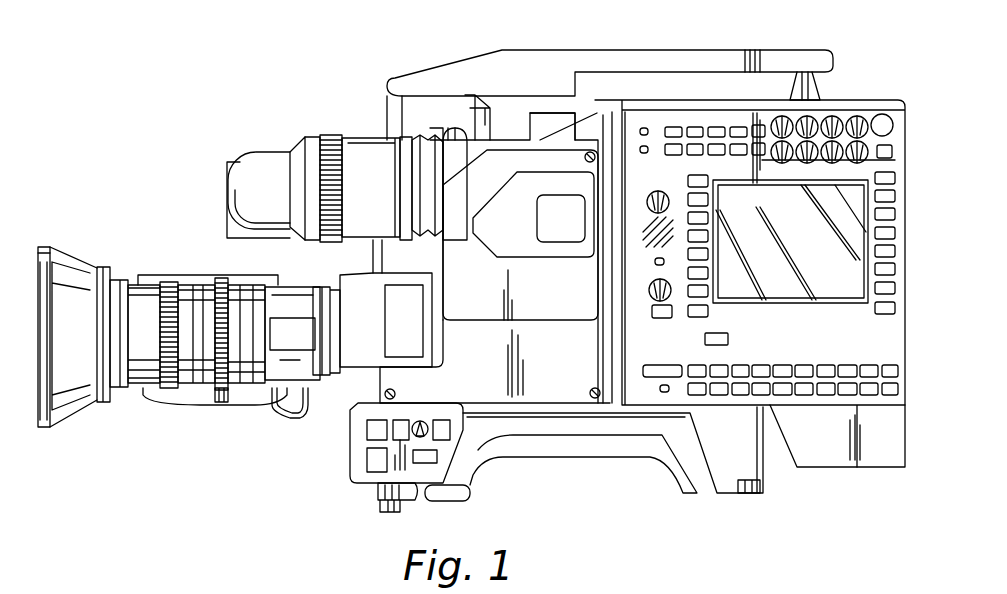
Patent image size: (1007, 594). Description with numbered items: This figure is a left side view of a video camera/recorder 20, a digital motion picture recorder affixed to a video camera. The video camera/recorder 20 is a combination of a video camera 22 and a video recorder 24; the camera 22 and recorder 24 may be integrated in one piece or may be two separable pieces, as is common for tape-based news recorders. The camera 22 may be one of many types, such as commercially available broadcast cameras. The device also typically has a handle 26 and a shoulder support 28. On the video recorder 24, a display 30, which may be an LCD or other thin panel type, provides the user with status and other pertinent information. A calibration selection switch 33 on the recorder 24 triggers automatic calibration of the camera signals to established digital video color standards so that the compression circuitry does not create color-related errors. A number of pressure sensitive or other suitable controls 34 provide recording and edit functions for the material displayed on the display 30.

The video camera/recorder 20 is at (338, 68).
The video camera 22 is at (518, 206).
The video recorder 24 is at (843, 100).
The handle 26 is at (670, 48).
The shoulder support 28 is at (650, 457).
The display 30 is at (812, 236).
The calibration selection switch 33 is at (728, 338).
The controls 34 is at (883, 314).